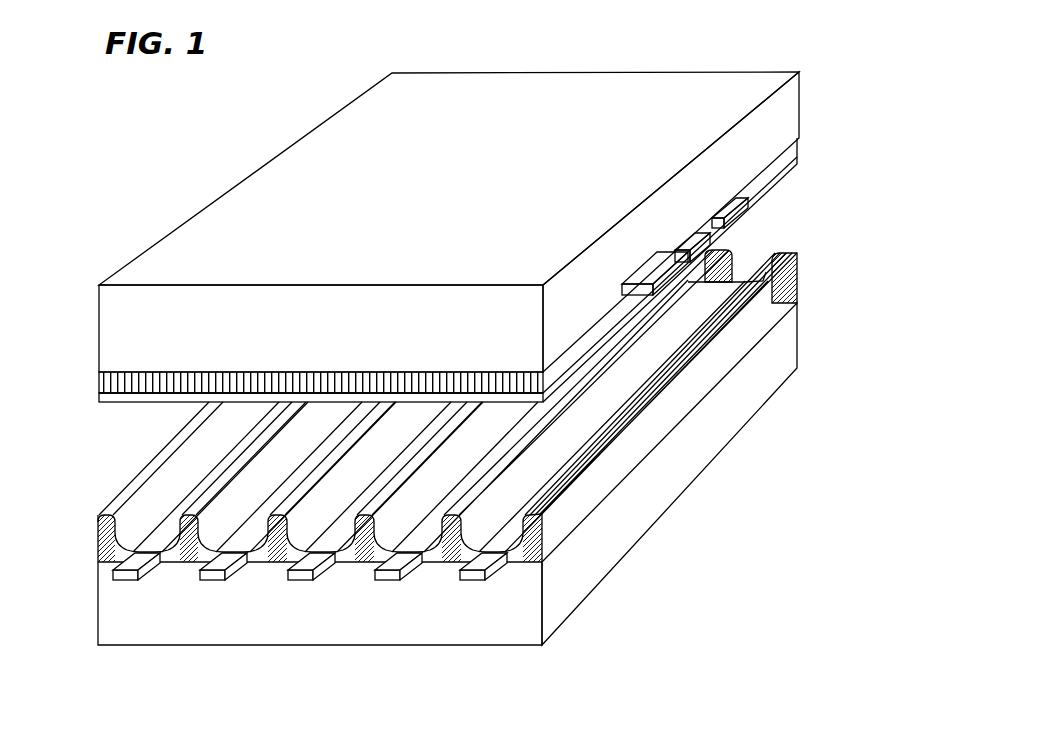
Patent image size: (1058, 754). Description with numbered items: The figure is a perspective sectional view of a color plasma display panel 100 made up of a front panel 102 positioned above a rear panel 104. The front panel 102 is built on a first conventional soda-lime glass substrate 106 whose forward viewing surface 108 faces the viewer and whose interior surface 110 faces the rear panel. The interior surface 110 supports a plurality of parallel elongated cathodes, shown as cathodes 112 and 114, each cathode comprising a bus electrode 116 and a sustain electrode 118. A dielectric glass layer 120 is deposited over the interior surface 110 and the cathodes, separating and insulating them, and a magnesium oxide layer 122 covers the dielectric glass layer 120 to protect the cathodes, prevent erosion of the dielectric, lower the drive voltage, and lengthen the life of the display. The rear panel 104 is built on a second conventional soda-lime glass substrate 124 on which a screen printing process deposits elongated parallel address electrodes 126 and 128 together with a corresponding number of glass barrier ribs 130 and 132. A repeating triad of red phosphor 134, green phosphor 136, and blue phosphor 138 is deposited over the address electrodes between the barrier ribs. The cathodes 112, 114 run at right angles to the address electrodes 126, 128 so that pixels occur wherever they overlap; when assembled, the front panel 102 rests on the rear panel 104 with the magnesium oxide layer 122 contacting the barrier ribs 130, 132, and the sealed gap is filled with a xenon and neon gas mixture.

The color plasma display panel 100 is at (705, 32).
The front panel 102 is at (460, 396).
The rear panel 104 is at (418, 485).
The first soda-lime glass substrate 106 is at (420, 222).
The forward viewing surface 108 is at (447, 166).
The interior surface 110 is at (419, 265).
The cathode 112 is at (786, 202).
The cathode 114 is at (749, 335).
The bus electrode 116 is at (778, 240).
The sustain electrode 118 is at (735, 266).
The dielectric glass layer 120 is at (421, 305).
The magnesium oxide layer 122 is at (320, 430).
The second soda-lime glass substrate 124 is at (669, 474).
The address electrode 126 is at (311, 615).
The address electrode 128 is at (310, 618).
The barrier rib 130 is at (274, 541).
The barrier rib 132 is at (533, 471).
The red phosphor 134 is at (131, 499).
The green phosphor 136 is at (177, 528).
The blue phosphor 138 is at (447, 469).